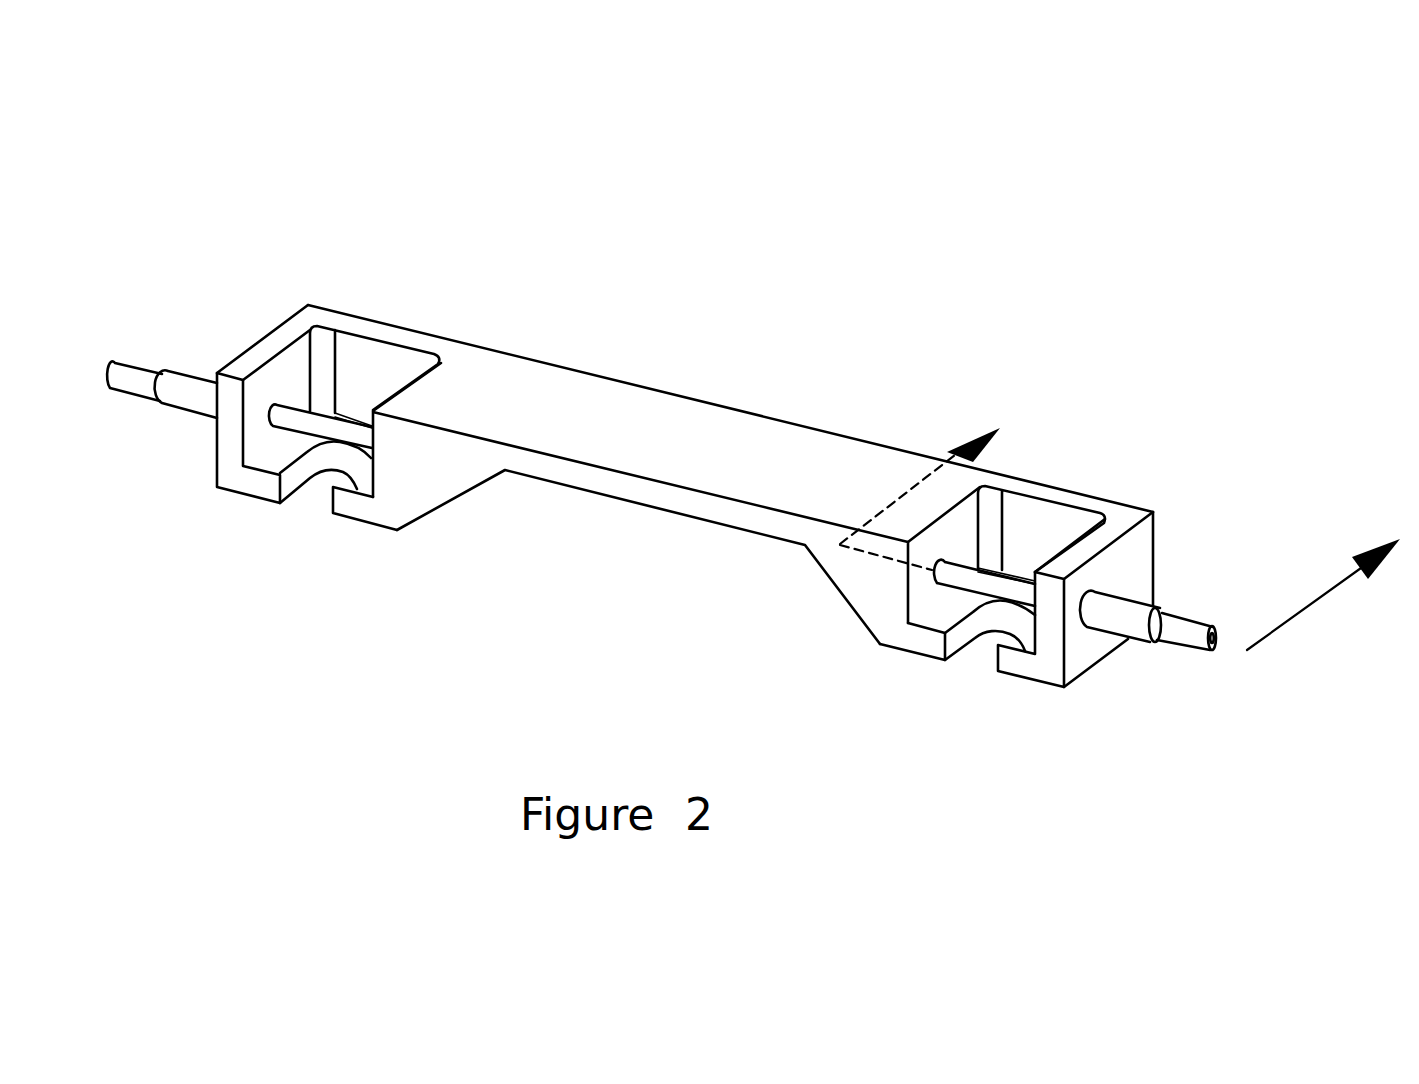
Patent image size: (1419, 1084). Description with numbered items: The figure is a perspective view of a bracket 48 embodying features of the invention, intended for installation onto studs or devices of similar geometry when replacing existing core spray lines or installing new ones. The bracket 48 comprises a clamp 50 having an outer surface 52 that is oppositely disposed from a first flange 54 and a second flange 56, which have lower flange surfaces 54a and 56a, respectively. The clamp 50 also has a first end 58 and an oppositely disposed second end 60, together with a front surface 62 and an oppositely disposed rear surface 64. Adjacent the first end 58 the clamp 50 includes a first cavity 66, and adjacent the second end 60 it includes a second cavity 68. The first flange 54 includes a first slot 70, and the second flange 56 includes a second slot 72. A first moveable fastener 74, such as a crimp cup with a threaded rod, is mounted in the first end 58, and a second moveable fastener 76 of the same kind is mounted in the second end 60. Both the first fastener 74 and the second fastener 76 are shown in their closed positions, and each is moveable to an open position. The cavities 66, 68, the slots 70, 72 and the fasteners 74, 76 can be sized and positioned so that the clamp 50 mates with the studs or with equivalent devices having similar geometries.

The bracket 48 is at (938, 262).
The clamp 50 is at (652, 391).
The outer surface 52 is at (752, 429).
The first flange 54 is at (1047, 691).
The lower flange surface 54a is at (889, 647).
The second flange 56 is at (244, 486).
The lower flange surface 56a is at (366, 521).
The first end 58 is at (1133, 543).
The second end 60 is at (262, 340).
The front surface 62 is at (423, 491).
The rear surface 64 is at (534, 357).
The first cavity 66 is at (1043, 505).
The second cavity 68 is at (383, 342).
The first slot 70 is at (948, 685).
The second slot 72 is at (295, 523).
The first moveable fastener 74 is at (1137, 628).
The second moveable fastener 76 is at (160, 405).